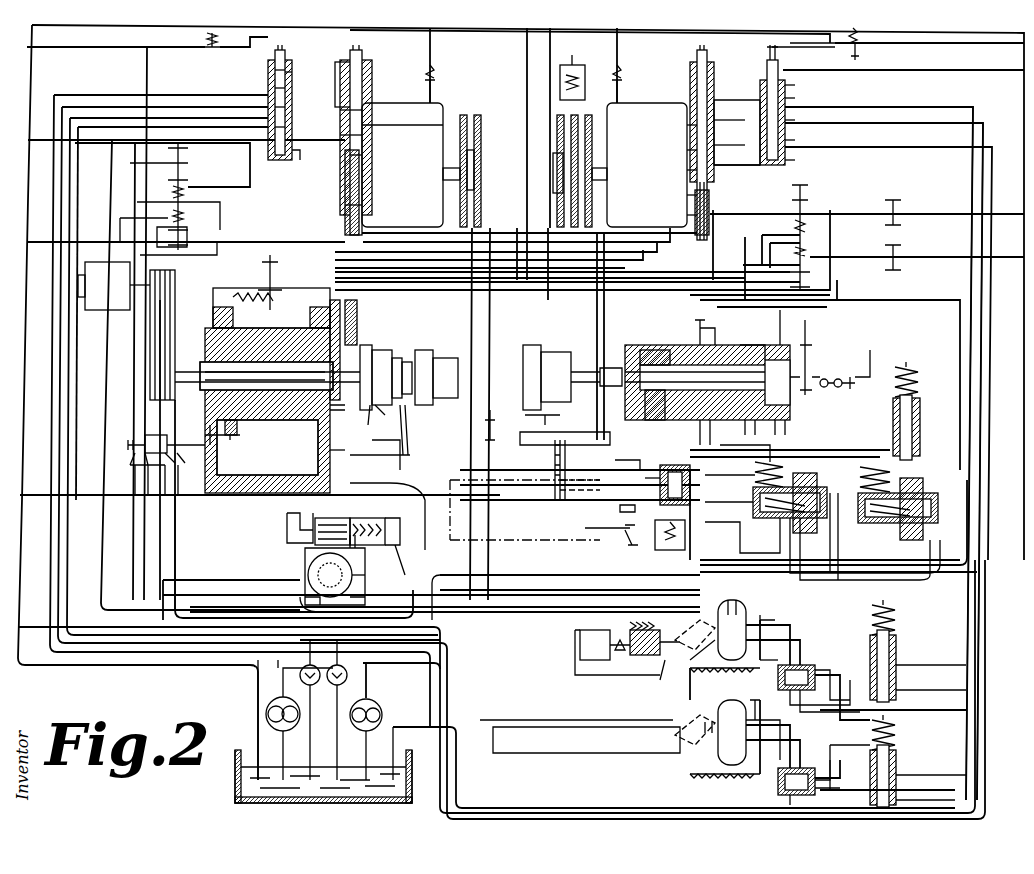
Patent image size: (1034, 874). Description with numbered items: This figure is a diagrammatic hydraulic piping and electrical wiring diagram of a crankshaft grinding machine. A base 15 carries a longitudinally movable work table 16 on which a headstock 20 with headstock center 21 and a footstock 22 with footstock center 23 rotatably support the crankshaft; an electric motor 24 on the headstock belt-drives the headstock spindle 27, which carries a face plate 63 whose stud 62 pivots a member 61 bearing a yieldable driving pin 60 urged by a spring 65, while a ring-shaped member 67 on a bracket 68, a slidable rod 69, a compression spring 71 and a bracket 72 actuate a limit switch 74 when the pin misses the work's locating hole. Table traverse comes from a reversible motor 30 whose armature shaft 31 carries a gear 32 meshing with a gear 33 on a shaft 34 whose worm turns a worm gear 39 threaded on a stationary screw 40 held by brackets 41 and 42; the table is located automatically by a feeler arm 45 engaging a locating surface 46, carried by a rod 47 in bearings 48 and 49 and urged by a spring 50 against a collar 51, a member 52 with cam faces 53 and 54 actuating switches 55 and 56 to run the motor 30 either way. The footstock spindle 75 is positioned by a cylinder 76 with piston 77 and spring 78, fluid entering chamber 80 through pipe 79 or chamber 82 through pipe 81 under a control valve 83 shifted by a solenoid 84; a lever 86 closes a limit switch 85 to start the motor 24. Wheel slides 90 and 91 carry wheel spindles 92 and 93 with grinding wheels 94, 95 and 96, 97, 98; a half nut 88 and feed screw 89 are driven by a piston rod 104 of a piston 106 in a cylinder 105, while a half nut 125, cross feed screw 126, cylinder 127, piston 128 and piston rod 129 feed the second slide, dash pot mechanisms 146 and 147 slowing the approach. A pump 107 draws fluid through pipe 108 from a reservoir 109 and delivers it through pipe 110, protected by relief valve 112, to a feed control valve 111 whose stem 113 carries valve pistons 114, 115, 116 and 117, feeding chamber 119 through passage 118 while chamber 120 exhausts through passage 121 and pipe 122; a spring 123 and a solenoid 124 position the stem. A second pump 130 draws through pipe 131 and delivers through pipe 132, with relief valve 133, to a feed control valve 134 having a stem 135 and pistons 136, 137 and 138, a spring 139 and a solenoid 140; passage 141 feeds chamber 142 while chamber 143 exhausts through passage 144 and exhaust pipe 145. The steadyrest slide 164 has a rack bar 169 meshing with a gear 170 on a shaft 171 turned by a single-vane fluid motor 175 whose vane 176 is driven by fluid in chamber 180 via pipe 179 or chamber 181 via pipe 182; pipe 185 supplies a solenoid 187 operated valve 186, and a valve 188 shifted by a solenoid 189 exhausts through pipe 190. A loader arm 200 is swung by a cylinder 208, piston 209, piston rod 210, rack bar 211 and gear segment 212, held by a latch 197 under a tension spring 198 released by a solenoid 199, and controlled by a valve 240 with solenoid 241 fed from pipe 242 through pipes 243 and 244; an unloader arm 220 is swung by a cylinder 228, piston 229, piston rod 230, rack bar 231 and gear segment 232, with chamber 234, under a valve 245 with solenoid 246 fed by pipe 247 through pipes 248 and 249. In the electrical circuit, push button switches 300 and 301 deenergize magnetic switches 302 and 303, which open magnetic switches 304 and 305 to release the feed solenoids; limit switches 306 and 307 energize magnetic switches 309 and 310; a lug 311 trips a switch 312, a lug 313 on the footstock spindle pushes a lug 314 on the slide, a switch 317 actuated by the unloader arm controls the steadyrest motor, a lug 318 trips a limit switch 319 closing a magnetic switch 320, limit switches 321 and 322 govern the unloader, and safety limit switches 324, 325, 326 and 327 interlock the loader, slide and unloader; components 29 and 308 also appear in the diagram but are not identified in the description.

The base 15 is at (175, 607).
The work supporting table 16 is at (397, 483).
The headstock 20 is at (262, 498).
The headstock center 21 is at (385, 358).
The footstock 22 is at (640, 345).
The footstock center 23 is at (620, 368).
The electric motor 24 is at (85, 272).
The headstock spindle 27 is at (262, 390).
The gear 29 is at (445, 350).
The reversible electric motor 30 is at (305, 572).
The armature shaft 31 is at (300, 600).
The gear 32 is at (365, 578).
The gear 33 is at (358, 548).
The rotatable shaft 34 is at (315, 560).
The worm gear 39 is at (340, 518).
The stationary non-rotatable screw 40 is at (368, 518).
The depending bracket 41 is at (287, 528).
The depending bracket 42 is at (395, 520).
The work engaging feeler arm 45 is at (410, 428).
The locating surface 46 is at (405, 358).
The slidably mounted rod 47 is at (292, 450).
The bearing 48 is at (205, 435).
The bearing 49 is at (343, 459).
The spring 50 is at (232, 440).
The collar 51 is at (236, 427).
The member 52 is at (150, 438).
The cam face 53 is at (128, 445).
The cam face 54 is at (180, 463).
The electric switch 55 is at (132, 466).
The electric switch 56 is at (160, 489).
The driving pin 60 is at (380, 348).
The pivotally mounted member 61 is at (378, 412).
The stud 62 is at (375, 463).
The face plate 63 is at (338, 412).
The spring 65 is at (341, 350).
The ring-shaped member 67 is at (376, 425).
The bracket 68 is at (358, 310).
The longitudinally slidable rod 69 is at (255, 312).
The compression spring 71 is at (271, 309).
The bracket 72 is at (308, 319).
The limit switch 74 is at (269, 279).
The footstock spindle 75 is at (660, 350).
The cylinder 76 is at (778, 360).
The piston 77 is at (757, 345).
The spring 78 is at (690, 412).
The pipe 79 is at (792, 425).
The cylinder chamber 80 is at (805, 395).
The pipe 81 is at (713, 433).
The cylinder chamber 82 is at (757, 426).
The control valve 83 is at (920, 410).
The solenoid 84 is at (920, 380).
The limit switch 85 is at (700, 322).
The pivotally mounted lever 86 is at (699, 333).
The half nut 88 is at (365, 207).
The feed screw 89 is at (362, 178).
The grinding wheel slide 90 is at (398, 103).
The grinding wheel slide 91 is at (660, 103).
The wheel spindle 92 is at (443, 172).
The wheel spindle 93 is at (607, 173).
The grinding wheel 94 is at (463, 115).
The grinding wheel 95 is at (478, 115).
The grinding wheel 96 is at (557, 148).
The grinding wheel 97 is at (571, 135).
The grinding wheel 98 is at (585, 120).
The piston rod 104 is at (365, 157).
The fluid pressure cylinder 105 is at (365, 138).
The piston 106 is at (365, 112).
The fluid pressure pump 107 is at (266, 708).
The pipe 108 is at (280, 742).
The reservoir 109 is at (235, 768).
The pipe 110 is at (185, 107).
The feed control valve 111 is at (268, 70).
The pressure relief valve 112 is at (330, 700).
The valve stem 113 is at (292, 82).
The valve piston 114 is at (268, 88).
The valve piston 115 is at (268, 107).
The valve piston 116 is at (268, 127).
The valve piston 117 is at (305, 160).
The pipe or passage 118 is at (335, 132).
The cylinder chamber 119 is at (402, 128).
The cylinder chamber 120 is at (372, 85).
The pipe or passage 121 is at (335, 117).
The pipe 122 is at (205, 95).
The spring 123 is at (285, 60).
The solenoid 124 is at (275, 56).
The half nut 125 is at (687, 214).
The cross feed screw 126 is at (687, 194).
The fluid pressure cylinder 127 is at (687, 148).
The piston 128 is at (687, 125).
The piston rod 129 is at (687, 168).
The fluid pressure pump 130 is at (380, 706).
The pipe 131 is at (393, 744).
The pipe 132 is at (950, 123).
The adjustable pressure relief valve 133 is at (315, 710).
The feed control valve 134 is at (785, 85).
The valve stem 135 is at (785, 98).
The valve piston 136 is at (785, 120).
The valve piston 137 is at (785, 140).
The valve piston 138 is at (785, 160).
The spring 139 is at (767, 68).
The electric solenoid 140 is at (800, 47).
The pipe or passage 141 is at (748, 165).
The cylinder chamber 142 is at (729, 142).
The cylinder chamber 143 is at (730, 120).
The pipe or passage 144 is at (735, 100).
The exhaust pipe 145 is at (875, 107).
The dash pot feed controlling mechanism 146 is at (340, 66).
The dash pot feed controlling mechanism 147 is at (695, 68).
The transversely movable slide 164 is at (400, 452).
The rack bar 169 is at (555, 463).
The gear 170 is at (580, 470).
The rotatable shaft 171 is at (582, 475).
The fluid motor 175 is at (668, 465).
The vane 176 is at (630, 457).
The pipe 179 is at (722, 475).
The motor chamber 180 is at (641, 473).
The motor chamber 181 is at (729, 503).
The pipe 182 is at (722, 522).
The pipe 185 is at (470, 575).
The control valve 186 is at (878, 523).
The electric solenoid 187 is at (862, 475).
The control valve 188 is at (760, 518).
The solenoid 189 is at (750, 468).
The pipe 190 is at (925, 600).
The solenoid actuated latch 197 is at (658, 682).
The tension spring 198 is at (630, 628).
The solenoid 199 is at (580, 645).
The work loader arm 200 is at (718, 650).
The fluid pressure cylinder 208 is at (825, 670).
The piston 209 is at (790, 660).
The piston rod 210 is at (795, 666).
The rack bar 211 is at (692, 660).
The gear segment 212 is at (712, 672).
The unloader arm 220 is at (700, 745).
The fluid pressure cylinder 228 is at (818, 792).
The piston 229 is at (778, 792).
The piston rod 230 is at (752, 745).
The rack bar 231 is at (690, 778).
The gear segment 232 is at (712, 778).
The cylinder chamber 234 is at (787, 802).
The control valve 240 is at (905, 700).
The solenoid 241 is at (870, 614).
The pipe 242 is at (925, 665).
The pipe 243 is at (839, 696).
The pipe 244 is at (868, 655).
The control valve 245 is at (900, 803).
The solenoid 246 is at (898, 725).
The pipe 247 is at (940, 775).
The pipe 248 is at (872, 760).
The pipe 249 is at (850, 758).
The push button switch 300 is at (893, 200).
The push button switch 301 is at (893, 245).
The magnetic switch 302 is at (808, 225).
The magnetic switch 303 is at (808, 254).
The magnetic switch 304 is at (205, 40).
The magnetic switch 305 is at (865, 52).
The limit switch 306 is at (438, 80).
The limit switch 307 is at (621, 80).
The valve 308 is at (560, 75).
The magnetic switch 309 is at (168, 180).
The magnetic switch 310 is at (173, 222).
The lug 311 is at (840, 345).
The switch 312 is at (810, 340).
The lug 313 is at (600, 395).
The lug 314 is at (565, 436).
The switch 317 is at (705, 730).
The lug 318 is at (595, 527).
The limit switch 319 is at (630, 548).
The magnetic switch 320 is at (668, 550).
The limit switch 321 is at (610, 504).
The limit switch 322 is at (876, 361).
The limit switch 324 is at (781, 620).
The limit switch 325 is at (550, 417).
The limit switch 326 is at (490, 440).
The limit switch 327 is at (758, 720).